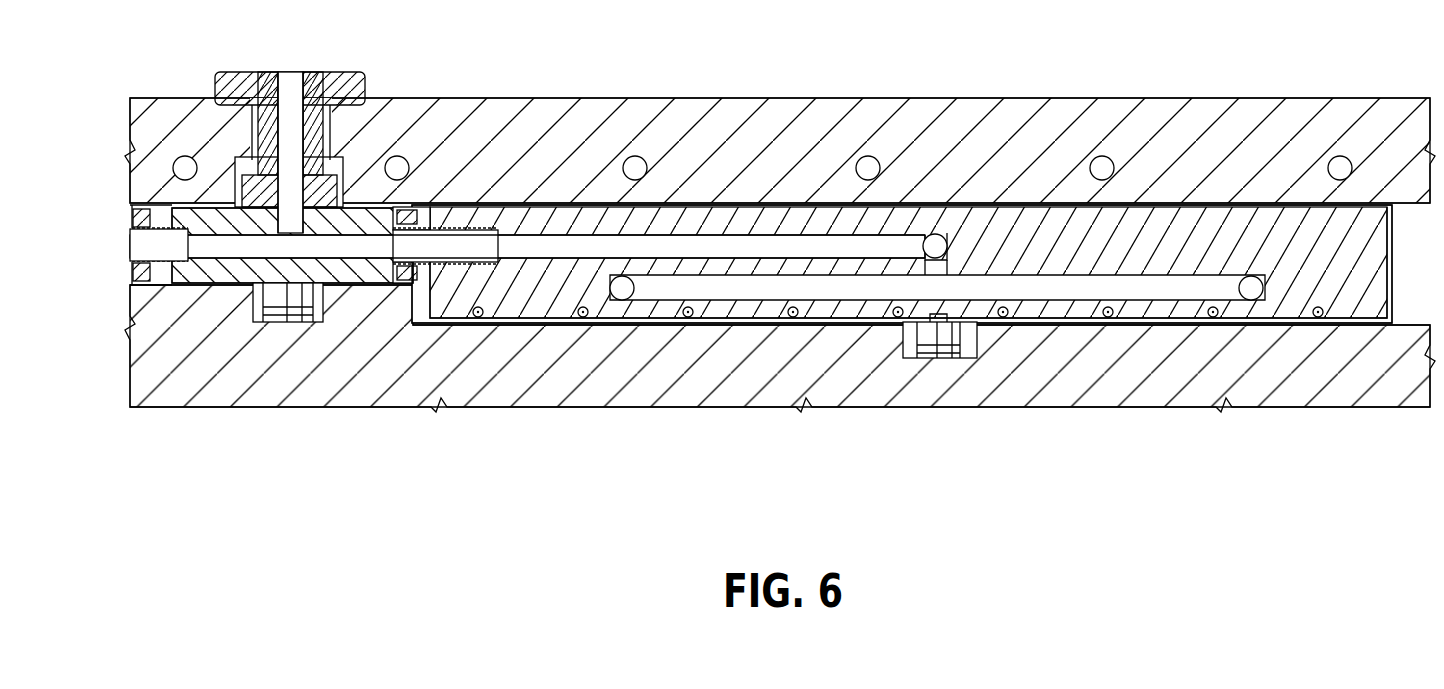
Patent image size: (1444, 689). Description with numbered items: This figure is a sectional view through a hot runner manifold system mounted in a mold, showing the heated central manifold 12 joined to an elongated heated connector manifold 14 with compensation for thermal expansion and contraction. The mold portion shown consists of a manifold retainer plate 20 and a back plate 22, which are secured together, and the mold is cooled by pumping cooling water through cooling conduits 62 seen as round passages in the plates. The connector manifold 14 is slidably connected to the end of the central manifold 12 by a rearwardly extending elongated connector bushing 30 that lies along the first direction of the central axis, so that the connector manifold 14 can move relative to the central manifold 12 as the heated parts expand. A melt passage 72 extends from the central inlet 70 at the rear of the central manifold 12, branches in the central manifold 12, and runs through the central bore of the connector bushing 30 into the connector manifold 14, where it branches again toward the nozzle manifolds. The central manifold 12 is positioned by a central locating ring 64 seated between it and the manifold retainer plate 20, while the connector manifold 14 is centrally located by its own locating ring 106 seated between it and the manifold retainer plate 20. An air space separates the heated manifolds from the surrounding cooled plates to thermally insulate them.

The central manifold 12 is at (358, 270).
The connector manifold 14 is at (1062, 306).
The manifold retainer plate 20 is at (1142, 393).
The back plate 22 is at (975, 112).
The connector bushing 30 is at (441, 230).
The cooling conduit 62 is at (636, 158).
The central locating ring 64 is at (297, 325).
The central inlet 70 is at (252, 142).
The melt passage 72 is at (738, 250).
The locating ring 106 is at (947, 358).